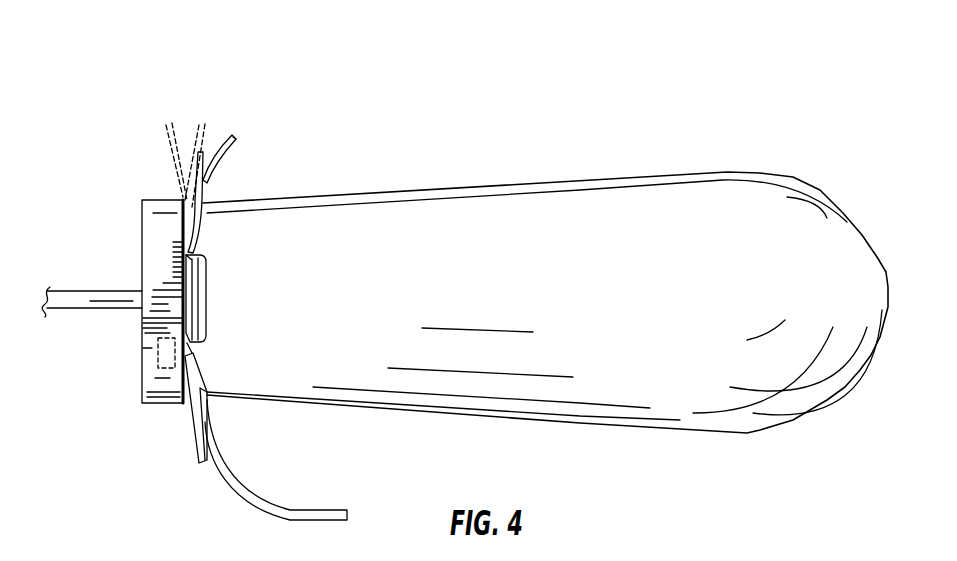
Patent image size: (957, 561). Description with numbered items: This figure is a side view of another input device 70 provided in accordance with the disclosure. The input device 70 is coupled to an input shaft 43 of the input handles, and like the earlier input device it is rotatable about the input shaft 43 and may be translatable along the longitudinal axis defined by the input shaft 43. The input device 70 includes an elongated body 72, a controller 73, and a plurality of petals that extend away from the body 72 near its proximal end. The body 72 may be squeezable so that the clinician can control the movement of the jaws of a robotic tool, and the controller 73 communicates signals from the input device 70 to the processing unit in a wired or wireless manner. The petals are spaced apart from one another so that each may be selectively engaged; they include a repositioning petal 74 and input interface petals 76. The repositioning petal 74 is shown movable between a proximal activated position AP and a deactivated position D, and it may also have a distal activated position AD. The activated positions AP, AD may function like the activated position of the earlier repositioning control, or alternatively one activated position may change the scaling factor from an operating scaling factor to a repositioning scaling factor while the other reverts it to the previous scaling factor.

The input shaft 43 is at (70, 292).
The input device 70 is at (514, 150).
The body 72 is at (810, 207).
The controller 73 is at (155, 357).
The repositioning petal 74 is at (218, 137).
The input interface petals 76 is at (192, 287).
The distal activated position AD is at (167, 126).
The proximal activated position AP is at (233, 137).
The deactivated position D is at (202, 123).